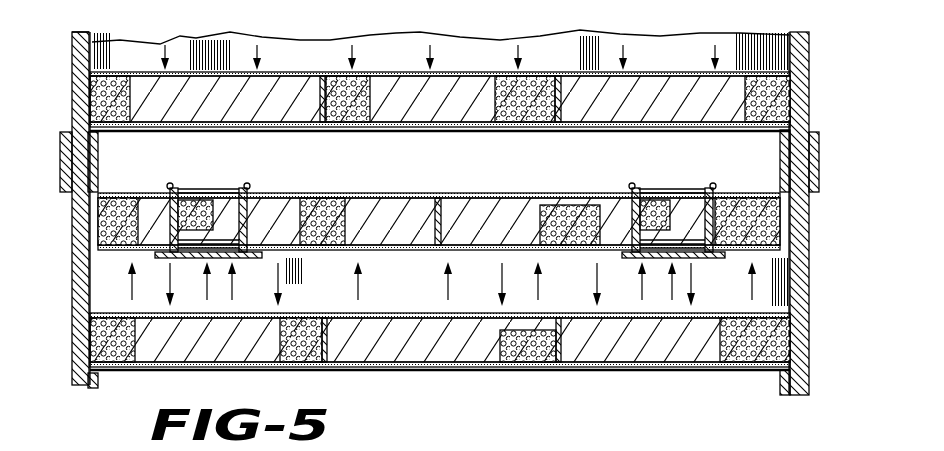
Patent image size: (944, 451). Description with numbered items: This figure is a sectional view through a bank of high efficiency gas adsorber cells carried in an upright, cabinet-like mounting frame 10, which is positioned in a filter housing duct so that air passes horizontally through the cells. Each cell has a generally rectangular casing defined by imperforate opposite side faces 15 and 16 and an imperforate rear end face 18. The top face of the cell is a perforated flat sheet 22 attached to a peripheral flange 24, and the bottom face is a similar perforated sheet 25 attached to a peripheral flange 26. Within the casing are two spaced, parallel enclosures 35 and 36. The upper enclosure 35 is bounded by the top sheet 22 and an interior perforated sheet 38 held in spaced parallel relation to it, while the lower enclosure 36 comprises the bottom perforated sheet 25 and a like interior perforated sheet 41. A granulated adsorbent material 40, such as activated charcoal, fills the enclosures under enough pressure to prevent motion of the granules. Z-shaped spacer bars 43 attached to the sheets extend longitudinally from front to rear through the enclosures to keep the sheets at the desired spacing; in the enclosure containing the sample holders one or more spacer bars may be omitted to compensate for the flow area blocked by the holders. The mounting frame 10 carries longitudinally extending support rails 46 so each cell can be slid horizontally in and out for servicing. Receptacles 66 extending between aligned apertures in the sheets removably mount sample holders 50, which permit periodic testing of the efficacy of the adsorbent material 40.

The mounting frame 10 is at (814, 90).
The side face 15 is at (792, 52).
The side face 16 is at (92, 42).
The rear end face 18 is at (428, 296).
The perforated flat sheet 22 is at (528, 204).
The peripheral flange 24 is at (590, 172).
The perforated sheet 25 is at (419, 120).
The peripheral flange 26 is at (441, 126).
The upper enclosure 35 is at (804, 219).
The lower enclosure 36 is at (804, 112).
The interior perforated sheet 38 is at (508, 248).
The granulated adsorbent material 40 is at (684, 48).
The interior perforated sheet 41 is at (490, 50).
The Z-shaped spacer bar 43 is at (318, 128).
The support rail 46 is at (90, 158).
The sample holder 50 is at (214, 264).
The receptacle 66 is at (262, 212).